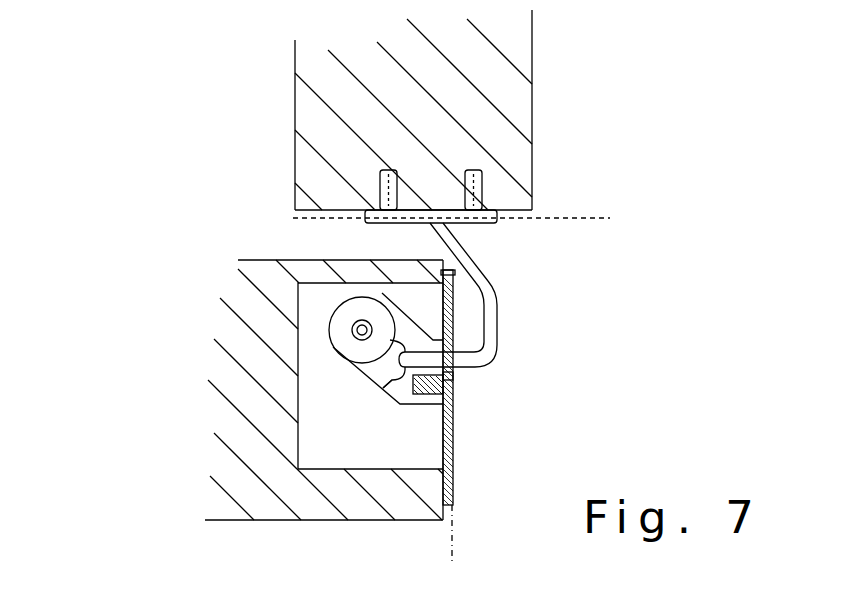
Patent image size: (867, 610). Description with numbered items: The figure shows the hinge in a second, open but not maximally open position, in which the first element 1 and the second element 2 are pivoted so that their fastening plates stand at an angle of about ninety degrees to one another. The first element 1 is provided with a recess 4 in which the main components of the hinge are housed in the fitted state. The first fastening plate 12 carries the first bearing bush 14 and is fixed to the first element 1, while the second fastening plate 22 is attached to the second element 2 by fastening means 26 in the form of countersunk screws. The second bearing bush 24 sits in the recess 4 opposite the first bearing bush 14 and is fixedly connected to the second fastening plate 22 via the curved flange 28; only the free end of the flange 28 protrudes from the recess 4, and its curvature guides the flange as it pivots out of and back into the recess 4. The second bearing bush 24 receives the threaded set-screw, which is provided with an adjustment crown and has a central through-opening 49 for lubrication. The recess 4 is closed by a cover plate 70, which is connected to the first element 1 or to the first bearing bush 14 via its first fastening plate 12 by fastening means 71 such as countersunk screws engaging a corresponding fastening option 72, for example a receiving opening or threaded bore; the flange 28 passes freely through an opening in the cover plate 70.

The first element 1 is at (302, 493).
The second element 2 is at (346, 152).
The recess 4 is at (355, 451).
The first fastening plate 12 is at (447, 467).
The first bearing bush 14 is at (381, 387).
The second fastening plate 22 is at (510, 186).
The second bearing bush 24 is at (385, 383).
The fastening means 26 is at (473, 170).
The curved flange 28 is at (472, 272).
The central through-opening 49 is at (355, 322).
The cover plate 70 is at (455, 412).
The fastening means 71 is at (453, 378).
The fastening option 72 is at (413, 387).